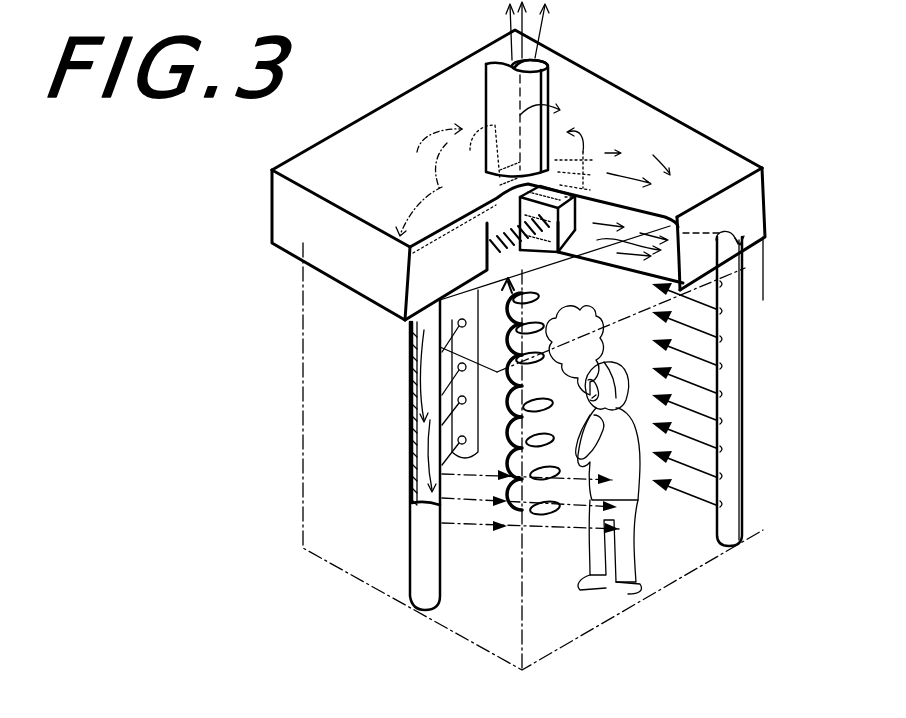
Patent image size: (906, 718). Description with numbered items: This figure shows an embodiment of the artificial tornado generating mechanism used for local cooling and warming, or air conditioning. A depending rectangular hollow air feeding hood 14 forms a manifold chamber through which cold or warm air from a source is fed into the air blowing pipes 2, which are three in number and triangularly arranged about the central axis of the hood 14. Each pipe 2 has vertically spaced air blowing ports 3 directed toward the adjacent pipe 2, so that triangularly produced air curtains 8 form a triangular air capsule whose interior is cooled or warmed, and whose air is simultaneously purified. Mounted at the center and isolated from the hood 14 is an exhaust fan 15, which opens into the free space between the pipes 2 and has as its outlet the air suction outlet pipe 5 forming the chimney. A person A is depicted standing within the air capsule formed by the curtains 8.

The air blowing pipe 2 is at (740, 400).
The air blowing port 3 is at (728, 449).
The air suction outlet pipe 5 is at (537, 118).
The air curtain 8 is at (690, 485).
The air feeding hood 14 is at (748, 218).
The exhaust fan 15 is at (577, 192).
The person A is at (582, 575).